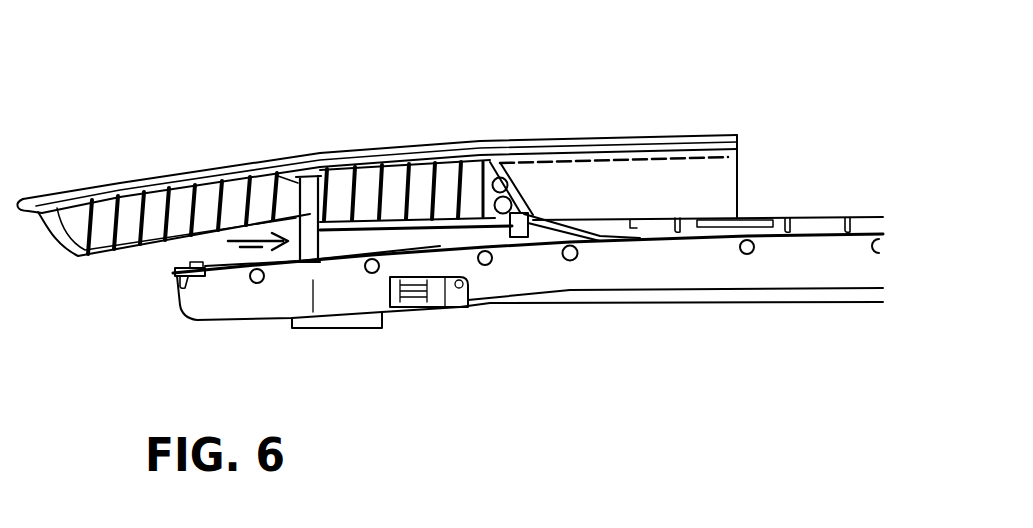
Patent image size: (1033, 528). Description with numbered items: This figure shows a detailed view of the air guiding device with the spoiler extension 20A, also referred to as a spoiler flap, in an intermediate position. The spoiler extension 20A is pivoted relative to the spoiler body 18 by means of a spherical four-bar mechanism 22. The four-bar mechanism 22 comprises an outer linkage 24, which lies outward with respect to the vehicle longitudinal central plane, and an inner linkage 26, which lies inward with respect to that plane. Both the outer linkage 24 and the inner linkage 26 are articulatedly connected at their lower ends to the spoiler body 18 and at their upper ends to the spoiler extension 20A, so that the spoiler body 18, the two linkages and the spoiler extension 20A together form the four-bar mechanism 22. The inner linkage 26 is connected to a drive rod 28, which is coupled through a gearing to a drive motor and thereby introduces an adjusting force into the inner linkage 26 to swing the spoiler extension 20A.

The spoiler body 18 is at (617, 250).
The spoiler extension 20A is at (415, 148).
The spherical four-bar mechanism 22 is at (231, 245).
The outer linkage 24 is at (278, 176).
The inner linkage 26 is at (517, 166).
The drive rod 28 is at (560, 250).